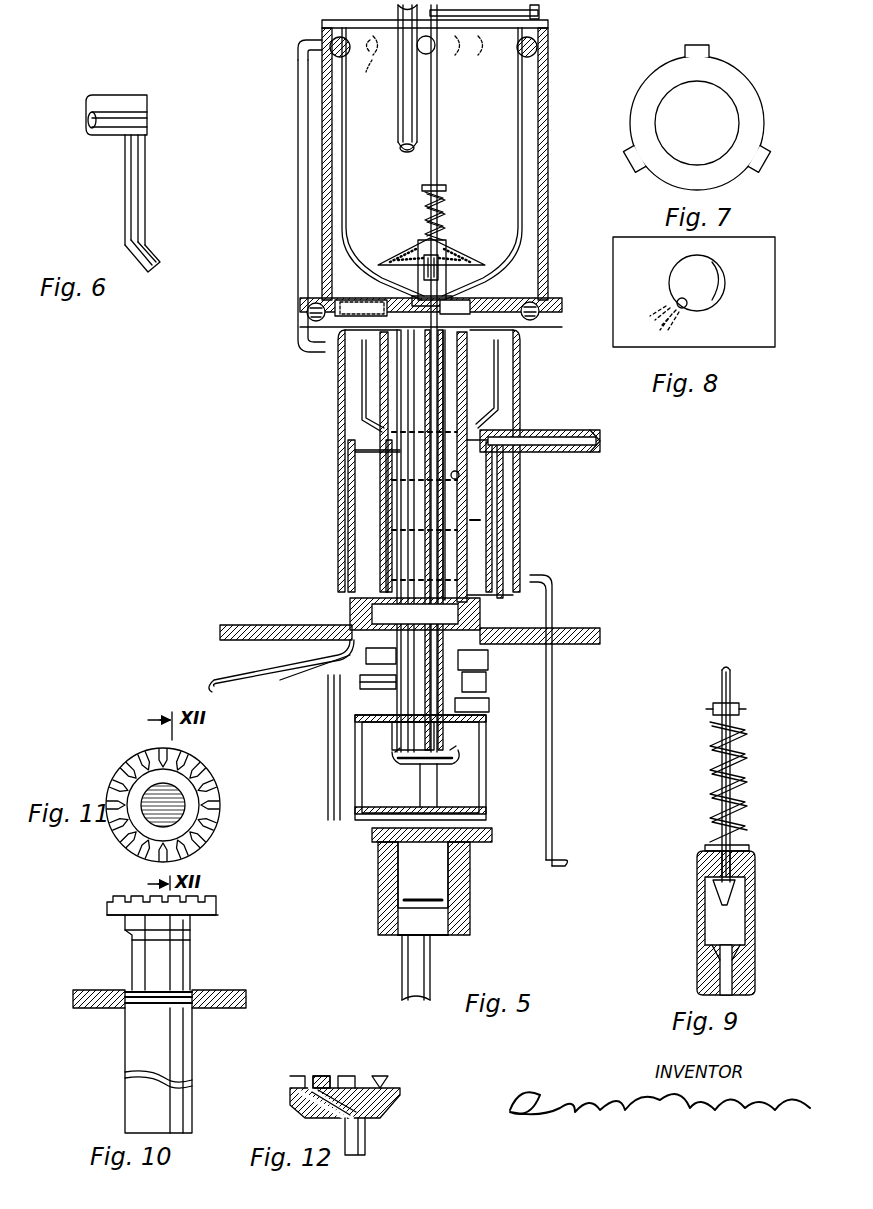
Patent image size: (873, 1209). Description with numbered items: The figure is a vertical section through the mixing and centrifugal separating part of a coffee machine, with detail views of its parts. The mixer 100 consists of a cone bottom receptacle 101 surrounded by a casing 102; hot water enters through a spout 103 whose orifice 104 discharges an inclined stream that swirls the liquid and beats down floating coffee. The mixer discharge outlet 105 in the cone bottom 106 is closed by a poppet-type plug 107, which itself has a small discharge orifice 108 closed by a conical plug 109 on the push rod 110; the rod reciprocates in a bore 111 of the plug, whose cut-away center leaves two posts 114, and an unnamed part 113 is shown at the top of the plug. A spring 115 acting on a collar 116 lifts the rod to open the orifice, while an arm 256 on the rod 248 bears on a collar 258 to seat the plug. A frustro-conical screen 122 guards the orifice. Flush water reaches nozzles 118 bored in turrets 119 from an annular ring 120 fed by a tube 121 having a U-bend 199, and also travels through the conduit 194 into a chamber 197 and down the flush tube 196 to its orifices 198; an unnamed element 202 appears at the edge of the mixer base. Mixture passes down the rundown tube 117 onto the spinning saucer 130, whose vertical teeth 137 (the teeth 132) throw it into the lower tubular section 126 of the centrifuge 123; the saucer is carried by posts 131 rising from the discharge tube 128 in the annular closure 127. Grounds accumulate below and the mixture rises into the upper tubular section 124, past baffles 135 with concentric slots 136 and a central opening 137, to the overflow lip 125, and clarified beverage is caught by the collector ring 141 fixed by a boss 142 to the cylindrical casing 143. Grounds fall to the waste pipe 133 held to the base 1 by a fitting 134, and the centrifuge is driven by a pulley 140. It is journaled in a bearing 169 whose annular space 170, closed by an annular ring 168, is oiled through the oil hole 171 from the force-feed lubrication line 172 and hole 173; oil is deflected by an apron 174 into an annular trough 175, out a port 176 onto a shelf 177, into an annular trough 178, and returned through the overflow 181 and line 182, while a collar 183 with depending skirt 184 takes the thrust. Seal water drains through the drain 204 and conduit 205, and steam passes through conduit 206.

In FIG. 5, the base 1 is at (602, 637).
In FIG. 5, the mixer 100 is at (357, 142).
In FIG. 5, the cone bottom receptacle 101 is at (522, 100).
In FIG. 8, the cone bottom receptacle 101 is at (750, 294).
In FIG. 5, the casing 102 is at (540, 110).
In FIG. 5, the spout 103 is at (398, 92).
In FIG. 6, the spout 103 is at (125, 170).
In FIG. 5, the orifice 104 is at (403, 150).
In FIG. 6, the orifice 104 is at (160, 265).
In FIG. 5, the mixer discharge outlet 105 is at (424, 300).
In FIG. 5, the cone bottom 106 is at (360, 270).
In FIG. 5, the poppet-type plug 107 is at (447, 284).
In FIG. 9, the poppet-type plug 107 is at (755, 868).
In FIG. 9, the discharge orifice 108 is at (755, 963).
In FIG. 5, the conical plug 109 is at (440, 268).
In FIG. 9, the conical plug 109 is at (735, 895).
In FIG. 5, the push rod 110 is at (438, 126).
In FIG. 9, the push rod 110 is at (732, 672).
In FIG. 9, the bore 111 is at (700, 860).
In FIG. 5, the nozzle plate 113 is at (447, 245).
In FIG. 9, the nozzle plate 113 is at (745, 846).
In FIG. 9, the posts 114 is at (697, 920).
In FIG. 5, the spring 115 is at (425, 200).
In FIG. 9, the spring 115 is at (746, 736).
In FIG. 5, the collar 116 is at (440, 185).
In FIG. 9, the collar 116 is at (737, 704).
In FIG. 5, the rundown tube 117 is at (440, 355).
In FIG. 5, the nozzles 118 is at (376, 71).
In FIG. 8, the nozzles 118 is at (686, 308).
In FIG. 5, the turrets 119 is at (378, 36).
In FIG. 8, the turrets 119 is at (722, 280).
In FIG. 5, the annular ring 120 is at (540, 44).
In FIG. 5, the tube 121 is at (298, 124).
In FIG. 5, the frustro-conical screen 122 is at (396, 252).
In FIG. 5, the centrifuge 123 is at (452, 728).
In FIG. 5, the upper tubular section 124 is at (455, 570).
In FIG. 5, the overflow lip 125 is at (512, 346).
In FIG. 5, the lower tubular section 126 is at (486, 780).
In FIG. 5, the annular closure 127 is at (478, 828).
In FIG. 10, the annular closure 127 is at (228, 1010).
In FIG. 5, the discharge tube 128 is at (440, 885).
In FIG. 10, the discharge tube 128 is at (192, 1057).
In FIG. 5, the saucer 130 is at (439, 760).
In FIG. 11, the saucer 130 is at (210, 836).
In FIG. 10, the saucer 130 is at (218, 898).
In FIG. 12, the saucer 130 is at (372, 1104).
In FIG. 5, the posts 131 is at (437, 790).
In FIG. 10, the posts 131 is at (132, 955).
In FIG. 12, the posts 131 is at (366, 1146).
In FIG. 5, the teeth 132 is at (462, 924).
In FIG. 5, the waste pipe 133 is at (402, 963).
In FIG. 5, the fitting 134 is at (378, 920).
In FIG. 5, the baffles 135 is at (470, 520).
In FIG. 7, the baffles 135 is at (740, 98).
In FIG. 7, the concentric slots 136 is at (680, 62).
In FIG. 7, the vertical teeth 137 is at (697, 123).
In FIG. 11, the vertical teeth 137 is at (212, 786).
In FIG. 10, the vertical teeth 137 is at (198, 896).
In FIG. 12, the vertical teeth 137 is at (380, 1076).
In FIG. 5, the pulley 140 is at (489, 708).
In FIG. 5, the collector ring 141 is at (364, 372).
In FIG. 5, the boss 142 is at (502, 405).
In FIG. 5, the cylindrical casing 143 is at (338, 407).
In FIG. 5, the annular ring 168 is at (356, 452).
In FIG. 5, the bearing 169 is at (470, 503).
In FIG. 5, the annular space 170 is at (378, 470).
In FIG. 5, the oil hole 171 is at (378, 558).
In FIG. 5, the force-feed lubrication line 172 is at (252, 674).
In FIG. 5, the hole 173 is at (475, 480).
In FIG. 5, the apron 174 is at (492, 480).
In FIG. 5, the annular trough 175 is at (480, 585).
In FIG. 5, the port 176 is at (492, 657).
In FIG. 5, the shelf 177 is at (338, 668).
In FIG. 5, the annular trough 178 is at (486, 684).
In FIG. 5, the overflow 181 is at (362, 682).
In FIG. 5, the line 182 is at (328, 743).
In FIG. 5, the collar 183 is at (348, 432).
In FIG. 5, the depending skirt 184 is at (405, 500).
In FIG. 5, the conduit 194 is at (431, 312).
In FIG. 5, the flush tube 196 is at (405, 737).
In FIG. 5, the chamber 197 is at (471, 304).
In FIG. 5, the orifices 198 is at (425, 520).
In FIG. 5, the U-bend 199 is at (298, 354).
In FIG. 5, the seal ball 202 is at (542, 306).
In FIG. 5, the drain 204 is at (554, 808).
In FIG. 5, the conduit 205 is at (564, 868).
In FIG. 5, the conduit 206 is at (602, 441).
In FIG. 5, the rod 248 is at (540, 15).
In FIG. 5, the arm 256 is at (462, 47).
In FIG. 5, the collar 258 is at (437, 60).